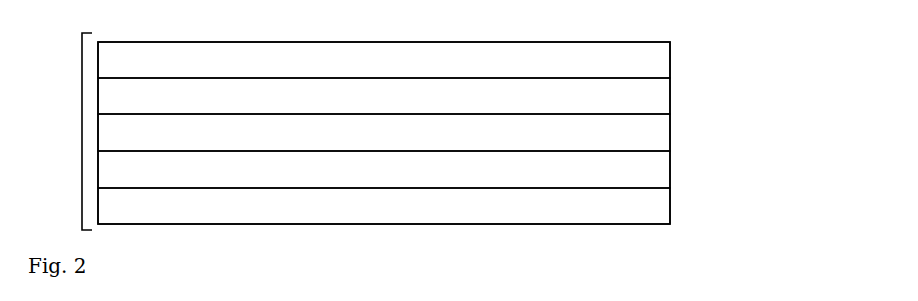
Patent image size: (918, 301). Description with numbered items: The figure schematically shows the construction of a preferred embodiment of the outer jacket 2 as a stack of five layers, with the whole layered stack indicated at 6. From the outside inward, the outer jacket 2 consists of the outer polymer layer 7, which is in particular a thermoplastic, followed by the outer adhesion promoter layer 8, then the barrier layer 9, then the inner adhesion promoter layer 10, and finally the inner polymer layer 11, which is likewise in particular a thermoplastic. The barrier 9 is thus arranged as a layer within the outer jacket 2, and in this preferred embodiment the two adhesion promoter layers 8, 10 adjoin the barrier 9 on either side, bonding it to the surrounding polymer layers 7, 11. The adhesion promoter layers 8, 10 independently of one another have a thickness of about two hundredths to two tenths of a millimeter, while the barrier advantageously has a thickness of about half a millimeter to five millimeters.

The outer jacket 2 is at (82, 132).
The layered structure 6 is at (384, 115).
The outer polymer layer 7 is at (681, 60).
The outer adhesion promoter layer 8 is at (681, 97).
The barrier layer 9 is at (689, 134).
The inner adhesion promoter layer 10 is at (681, 171).
The inner polymer layer 11 is at (681, 206).